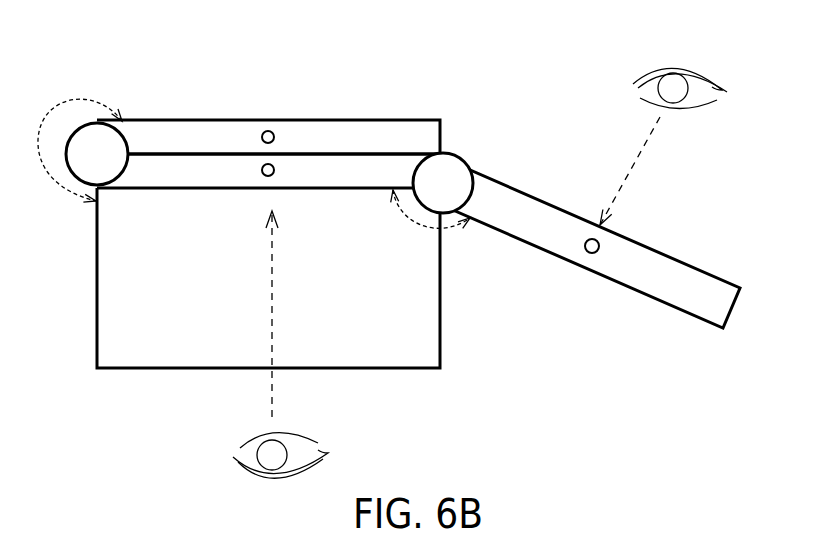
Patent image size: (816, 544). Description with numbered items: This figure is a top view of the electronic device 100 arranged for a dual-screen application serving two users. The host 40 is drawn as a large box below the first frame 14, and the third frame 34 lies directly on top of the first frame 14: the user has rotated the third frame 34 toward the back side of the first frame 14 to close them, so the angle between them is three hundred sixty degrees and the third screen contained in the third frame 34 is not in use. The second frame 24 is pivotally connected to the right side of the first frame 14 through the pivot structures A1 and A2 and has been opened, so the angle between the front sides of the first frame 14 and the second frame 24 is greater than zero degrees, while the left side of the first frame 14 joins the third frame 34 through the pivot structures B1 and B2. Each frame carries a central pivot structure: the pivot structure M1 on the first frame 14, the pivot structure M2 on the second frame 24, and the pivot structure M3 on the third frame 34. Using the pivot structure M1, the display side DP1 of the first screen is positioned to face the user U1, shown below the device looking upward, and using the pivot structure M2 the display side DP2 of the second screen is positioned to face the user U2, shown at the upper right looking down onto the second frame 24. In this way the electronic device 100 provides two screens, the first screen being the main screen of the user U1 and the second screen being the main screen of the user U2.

The electronic device 100 is at (488, 55).
The display side of the first screen DP1 is at (190, 190).
The display side of the second screen DP2 is at (663, 252).
The third frame 34 is at (268, 137).
The first frame 14 is at (268, 171).
The host 40 is at (268, 278).
The second frame 24 is at (596, 249).
The pivot structure M1 is at (274, 170).
The pivot structure M2 is at (590, 254).
The pivot structure M3 is at (274, 137).
The user U1 is at (280, 344).
The user U2 is at (671, 136).